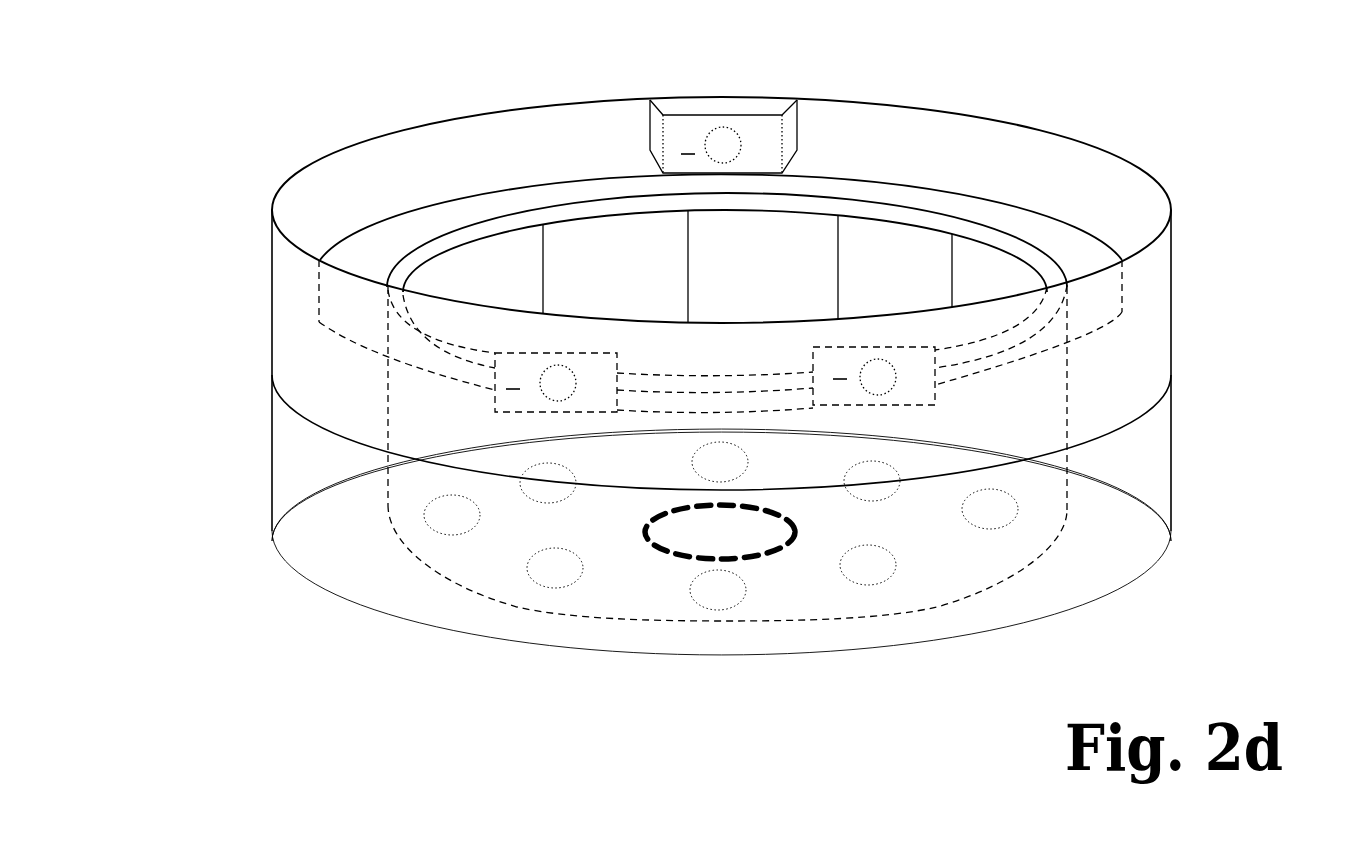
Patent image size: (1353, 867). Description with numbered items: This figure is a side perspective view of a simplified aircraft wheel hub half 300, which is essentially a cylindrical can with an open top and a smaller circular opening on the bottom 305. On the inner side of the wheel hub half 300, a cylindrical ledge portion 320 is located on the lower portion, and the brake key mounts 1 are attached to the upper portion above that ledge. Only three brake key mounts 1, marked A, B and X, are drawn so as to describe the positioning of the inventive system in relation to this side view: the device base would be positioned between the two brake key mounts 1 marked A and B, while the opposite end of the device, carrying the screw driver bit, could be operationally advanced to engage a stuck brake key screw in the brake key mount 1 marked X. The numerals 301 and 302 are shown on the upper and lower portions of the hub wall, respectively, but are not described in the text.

The brake key mount 1 is at (803, 148).
The wheel hub half 300 is at (250, 290).
The upper container portion 301 is at (1183, 280).
The lower container portion 302 is at (1190, 400).
The circular opening on the bottom 305 is at (677, 572).
The cylindrical ledge portion 320 is at (1062, 237).